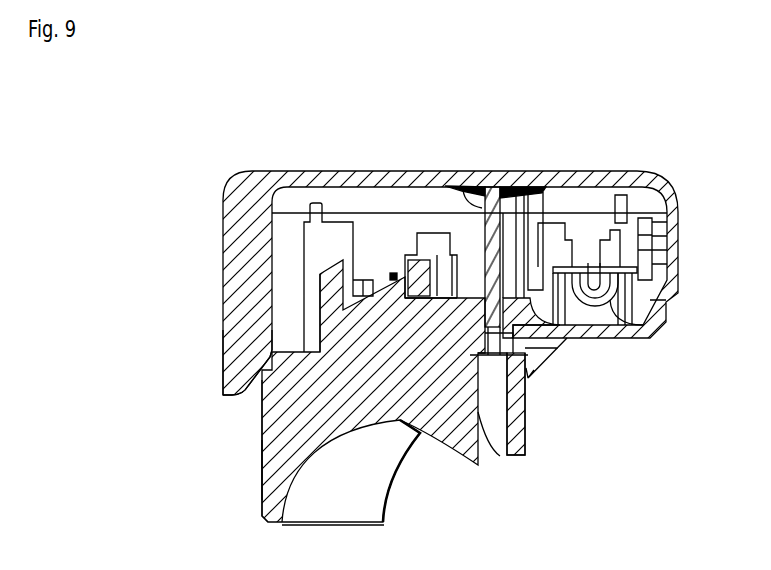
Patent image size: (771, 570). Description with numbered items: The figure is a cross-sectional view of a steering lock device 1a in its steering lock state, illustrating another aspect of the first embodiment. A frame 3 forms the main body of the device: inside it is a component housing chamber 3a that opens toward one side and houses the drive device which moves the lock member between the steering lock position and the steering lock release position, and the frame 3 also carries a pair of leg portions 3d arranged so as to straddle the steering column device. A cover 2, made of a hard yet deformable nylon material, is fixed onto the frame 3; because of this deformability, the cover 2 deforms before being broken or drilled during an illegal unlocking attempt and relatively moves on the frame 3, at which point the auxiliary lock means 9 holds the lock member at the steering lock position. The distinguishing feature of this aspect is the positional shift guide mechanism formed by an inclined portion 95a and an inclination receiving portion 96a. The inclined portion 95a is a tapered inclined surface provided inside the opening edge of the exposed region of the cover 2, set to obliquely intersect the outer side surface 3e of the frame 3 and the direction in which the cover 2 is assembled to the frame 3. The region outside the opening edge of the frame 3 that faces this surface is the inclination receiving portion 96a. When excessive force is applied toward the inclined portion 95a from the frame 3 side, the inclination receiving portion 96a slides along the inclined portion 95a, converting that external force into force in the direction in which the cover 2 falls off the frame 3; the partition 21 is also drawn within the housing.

The steering lock device 1a is at (673, 158).
The cover 2 is at (683, 208).
The frame 3 is at (626, 337).
The component housing chamber 3a is at (389, 229).
The leg portion 3d is at (273, 475).
The outer side surface 3e is at (262, 440).
The auxiliary lock means 9 is at (240, 334).
The partition wall 21 is at (470, 184).
The inclined portion 95a is at (247, 398).
The inclination receiving portion 96a is at (262, 366).